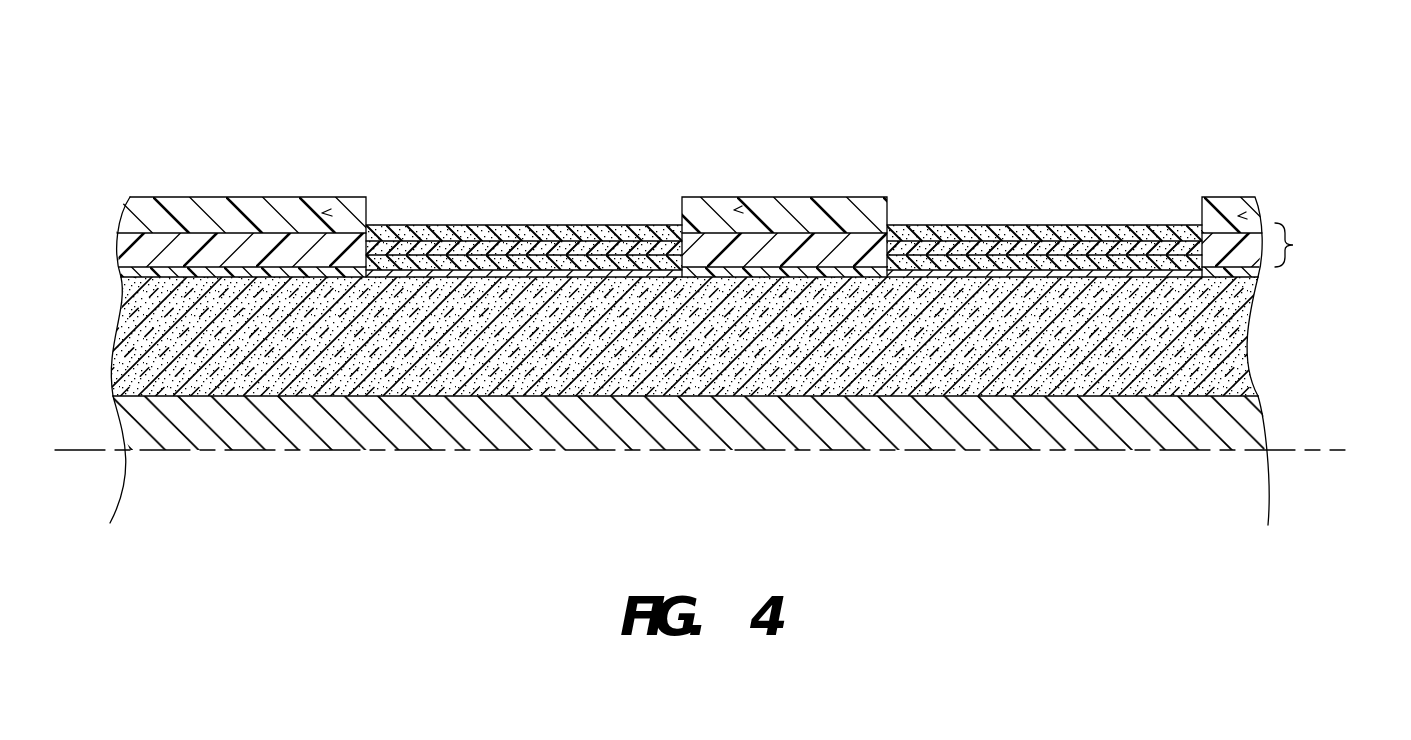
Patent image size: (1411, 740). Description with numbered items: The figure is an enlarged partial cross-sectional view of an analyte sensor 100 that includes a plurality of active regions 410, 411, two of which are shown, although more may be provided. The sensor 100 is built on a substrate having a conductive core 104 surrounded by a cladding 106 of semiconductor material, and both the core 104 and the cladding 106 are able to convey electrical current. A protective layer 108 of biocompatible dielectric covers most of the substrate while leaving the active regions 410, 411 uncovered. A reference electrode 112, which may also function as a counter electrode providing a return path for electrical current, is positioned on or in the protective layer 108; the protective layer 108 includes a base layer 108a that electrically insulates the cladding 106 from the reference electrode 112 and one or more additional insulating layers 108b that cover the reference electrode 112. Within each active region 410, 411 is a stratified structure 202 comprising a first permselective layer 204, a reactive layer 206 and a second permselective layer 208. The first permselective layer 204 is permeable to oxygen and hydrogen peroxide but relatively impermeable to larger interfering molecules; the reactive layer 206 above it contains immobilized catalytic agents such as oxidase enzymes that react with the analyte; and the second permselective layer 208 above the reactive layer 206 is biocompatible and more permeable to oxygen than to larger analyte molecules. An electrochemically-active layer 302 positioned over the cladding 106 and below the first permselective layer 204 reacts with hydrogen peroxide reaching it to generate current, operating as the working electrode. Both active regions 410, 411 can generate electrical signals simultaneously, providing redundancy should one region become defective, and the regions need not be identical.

The analyte sensor 100 is at (218, 104).
The conductive core 104 is at (1243, 420).
The cladding 106 is at (1215, 348).
The protective layer 108 is at (205, 196).
The base layer 108a is at (125, 272).
The additional insulating layer 108b is at (330, 212).
The reference electrode 112 is at (290, 242).
The stratified structure 202 is at (1293, 245).
The first permselective layer 204 is at (632, 273).
The reactive layer 206 is at (478, 235).
The second permselective layer 208 is at (372, 233).
The electrochemically-active layer 302 is at (585, 247).
The active region 410 is at (428, 130).
The active region 411 is at (1035, 135).